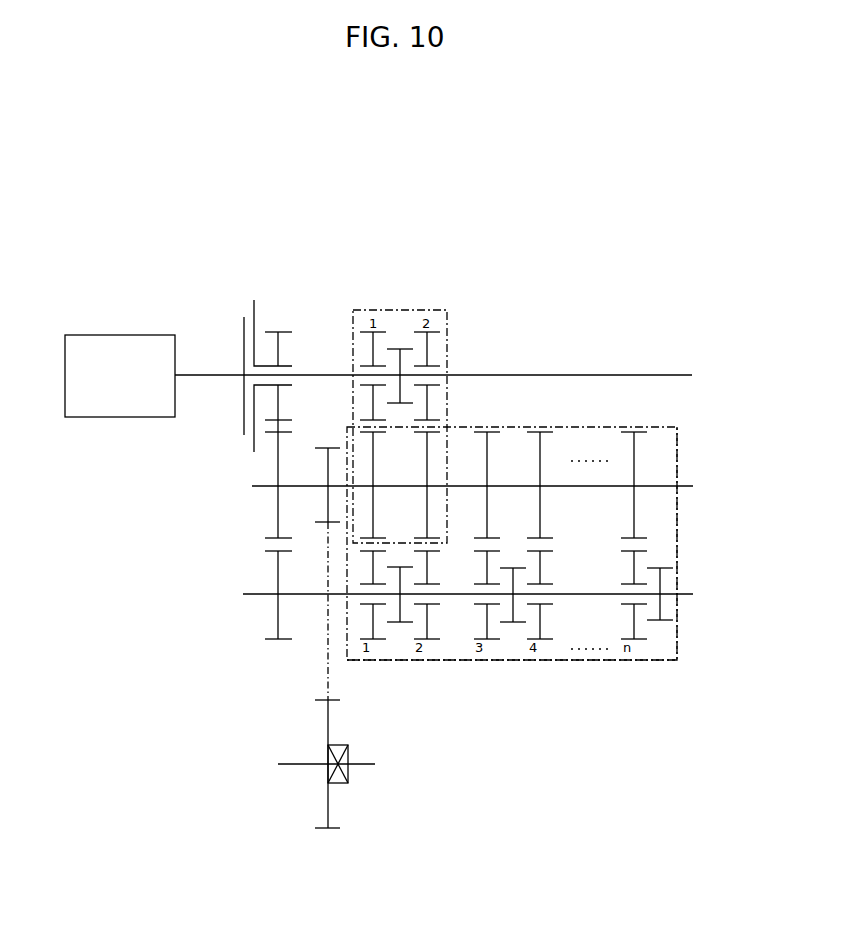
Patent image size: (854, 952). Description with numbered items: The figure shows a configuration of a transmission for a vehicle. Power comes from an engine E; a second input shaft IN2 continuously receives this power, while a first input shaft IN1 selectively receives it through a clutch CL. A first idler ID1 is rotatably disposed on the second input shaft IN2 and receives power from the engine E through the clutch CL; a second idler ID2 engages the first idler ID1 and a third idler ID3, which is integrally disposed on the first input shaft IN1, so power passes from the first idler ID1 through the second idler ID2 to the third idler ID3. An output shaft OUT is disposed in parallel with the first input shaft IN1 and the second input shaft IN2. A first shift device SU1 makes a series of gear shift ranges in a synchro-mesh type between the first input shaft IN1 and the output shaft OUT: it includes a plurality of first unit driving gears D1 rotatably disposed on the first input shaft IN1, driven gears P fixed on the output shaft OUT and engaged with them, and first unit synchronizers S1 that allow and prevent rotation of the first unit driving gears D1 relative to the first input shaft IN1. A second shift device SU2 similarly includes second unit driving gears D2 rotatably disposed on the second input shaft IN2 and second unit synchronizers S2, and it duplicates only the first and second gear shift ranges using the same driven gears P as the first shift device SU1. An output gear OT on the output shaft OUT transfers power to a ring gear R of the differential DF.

The engine E is at (118, 335).
The clutch CL is at (250, 311).
The first idler ID1 is at (279, 332).
The second idler ID2 is at (270, 540).
The third idler ID3 is at (279, 641).
The output gear OT is at (328, 448).
The first input shaft IN1 is at (664, 594).
The second input shaft IN2 is at (655, 375).
The output shaft OUT is at (677, 480).
The first shift device SU1 is at (583, 661).
The second shift device SU2 is at (368, 310).
The first unit synchronizer S1 is at (400, 640).
The second unit synchronizer S2 is at (401, 349).
The first unit driving gear D1 is at (373, 645).
The second unit driving gear D2 is at (430, 330).
The driven gear P is at (645, 430).
The differential DF is at (308, 786).
The ring gear R is at (328, 830).